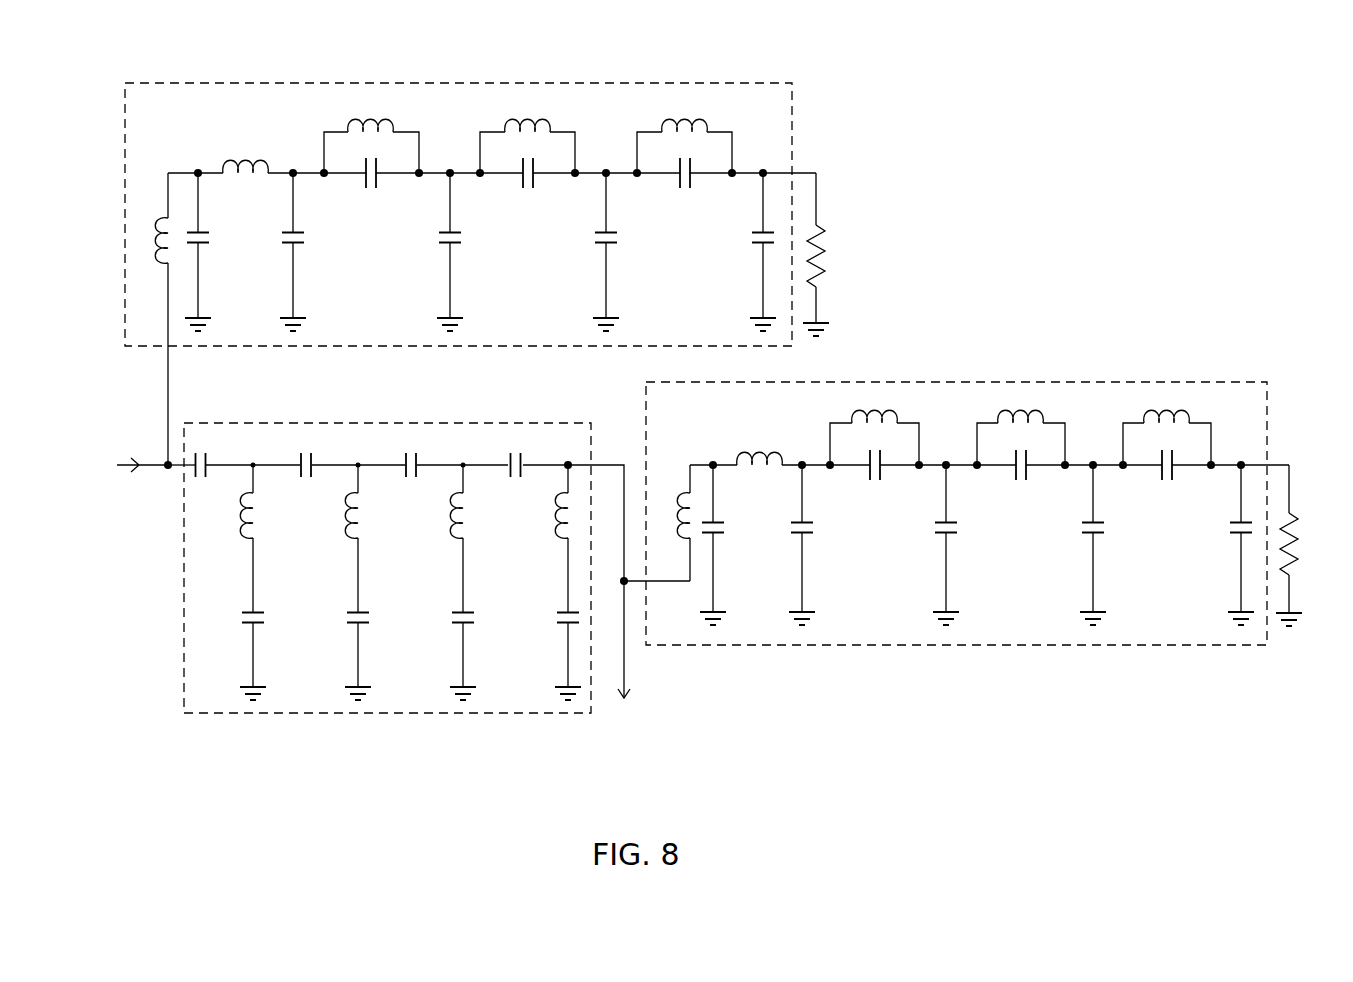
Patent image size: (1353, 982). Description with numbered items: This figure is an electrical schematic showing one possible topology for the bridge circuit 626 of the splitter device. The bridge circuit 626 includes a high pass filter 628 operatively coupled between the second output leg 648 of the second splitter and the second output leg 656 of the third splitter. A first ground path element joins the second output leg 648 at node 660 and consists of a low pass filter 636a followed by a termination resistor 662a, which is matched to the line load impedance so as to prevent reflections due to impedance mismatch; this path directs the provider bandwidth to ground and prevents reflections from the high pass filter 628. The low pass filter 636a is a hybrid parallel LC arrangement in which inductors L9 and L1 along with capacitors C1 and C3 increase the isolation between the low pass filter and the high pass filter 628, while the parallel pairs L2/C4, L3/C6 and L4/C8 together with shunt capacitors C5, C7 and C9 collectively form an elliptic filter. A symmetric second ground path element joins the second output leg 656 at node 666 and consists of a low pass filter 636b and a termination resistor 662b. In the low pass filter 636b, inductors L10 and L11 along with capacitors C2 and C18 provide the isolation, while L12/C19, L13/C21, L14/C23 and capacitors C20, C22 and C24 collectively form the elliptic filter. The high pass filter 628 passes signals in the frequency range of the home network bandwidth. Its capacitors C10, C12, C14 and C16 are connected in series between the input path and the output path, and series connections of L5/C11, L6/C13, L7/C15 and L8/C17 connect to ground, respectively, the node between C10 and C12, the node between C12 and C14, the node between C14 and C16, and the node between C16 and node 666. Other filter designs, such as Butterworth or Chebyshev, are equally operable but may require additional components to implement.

The bridge circuit 626 is at (289, 35).
The low pass filter 636a is at (763, 83).
The low pass filter 636b is at (1092, 382).
The high pass filter 628 is at (298, 713).
The second output leg 648 is at (131, 462).
The node 660 is at (169, 470).
The node 666 is at (621, 582).
The second output leg 656 is at (628, 665).
The termination resistor 662a is at (822, 242).
The termination resistor 662b is at (1296, 532).
The inductor L1 is at (246, 157).
The inductor L2 is at (371, 136).
The inductor L3 is at (527, 136).
The inductor L4 is at (684, 136).
The inductor L5 is at (264, 501).
The inductor L6 is at (369, 501).
The inductor L7 is at (474, 501).
The inductor L8 is at (552, 501).
The inductor L9 is at (153, 319).
The inductor L10 is at (671, 523).
The inductor L11 is at (760, 450).
The inductor L12 is at (874, 426).
The inductor L13 is at (1021, 426).
The inductor L14 is at (1167, 426).
The capacitor C1 is at (210, 252).
The capacitor C2 is at (726, 545).
The capacitor C3 is at (305, 252).
The capacitor C4 is at (371, 185).
The capacitor C5 is at (462, 252).
The capacitor C6 is at (527, 185).
The capacitor C7 is at (618, 252).
The capacitor C8 is at (684, 185).
The capacitor C9 is at (751, 252).
The capacitor C10 is at (192, 455).
The capacitor C11 is at (236, 619).
The capacitor C12 is at (306, 455).
The capacitor C13 is at (341, 619).
The capacitor C14 is at (411, 455).
The capacitor C15 is at (446, 619).
The capacitor C16 is at (515, 455).
The capacitor C17 is at (552, 619).
The capacitor C18 is at (820, 545).
The capacitor C19 is at (874, 478).
The capacitor C20 is at (964, 545).
The capacitor C21 is at (1021, 478).
The capacitor C22 is at (1111, 545).
The capacitor C23 is at (1167, 478).
The capacitor C24 is at (1223, 545).